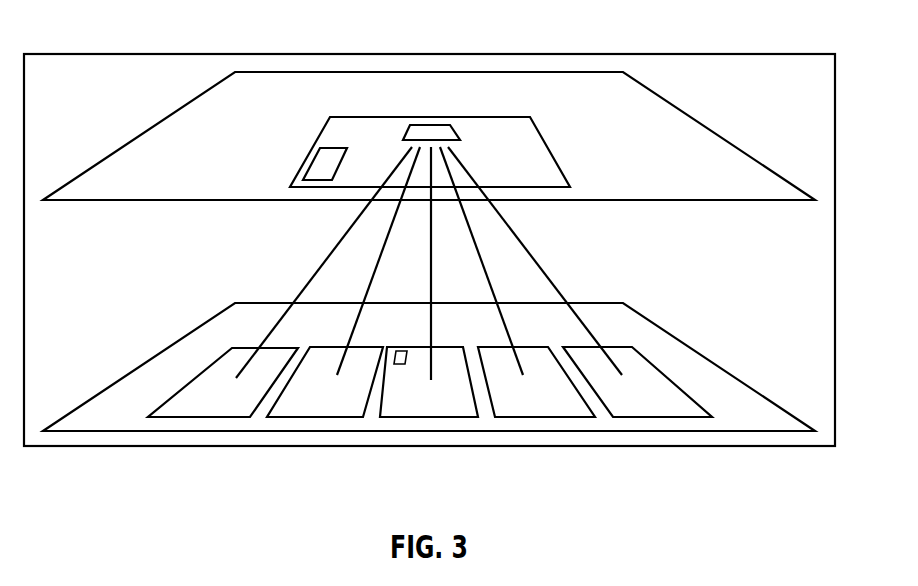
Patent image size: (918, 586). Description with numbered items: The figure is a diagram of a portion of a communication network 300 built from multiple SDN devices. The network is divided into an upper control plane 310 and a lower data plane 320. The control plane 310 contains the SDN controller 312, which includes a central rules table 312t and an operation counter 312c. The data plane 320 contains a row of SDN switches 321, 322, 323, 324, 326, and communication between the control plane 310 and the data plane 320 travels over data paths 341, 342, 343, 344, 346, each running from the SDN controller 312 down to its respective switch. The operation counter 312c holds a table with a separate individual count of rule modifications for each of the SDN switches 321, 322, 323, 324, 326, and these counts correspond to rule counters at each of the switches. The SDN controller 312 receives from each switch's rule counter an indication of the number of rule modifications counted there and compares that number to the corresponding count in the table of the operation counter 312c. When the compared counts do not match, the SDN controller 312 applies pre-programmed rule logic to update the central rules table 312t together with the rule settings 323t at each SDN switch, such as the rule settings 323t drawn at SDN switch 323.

The communication network 300 is at (182, 45).
The control plane 310 is at (602, 113).
The SDN controller 312 is at (527, 153).
The central rules table 312t is at (400, 133).
The operation counter 312c is at (323, 171).
The data plane 320 is at (564, 339).
The SDN switch 321 is at (232, 413).
The SDN switch 322 is at (344, 413).
The SDN switch 323 is at (452, 413).
The rule settings 323t is at (397, 350).
The SDN switch 324 is at (562, 413).
The SDN switch 326 is at (670, 413).
The data path 341 is at (291, 302).
The data path 342 is at (365, 292).
The data path 343 is at (431, 272).
The data path 344 is at (482, 262).
The data path 346 is at (547, 276).